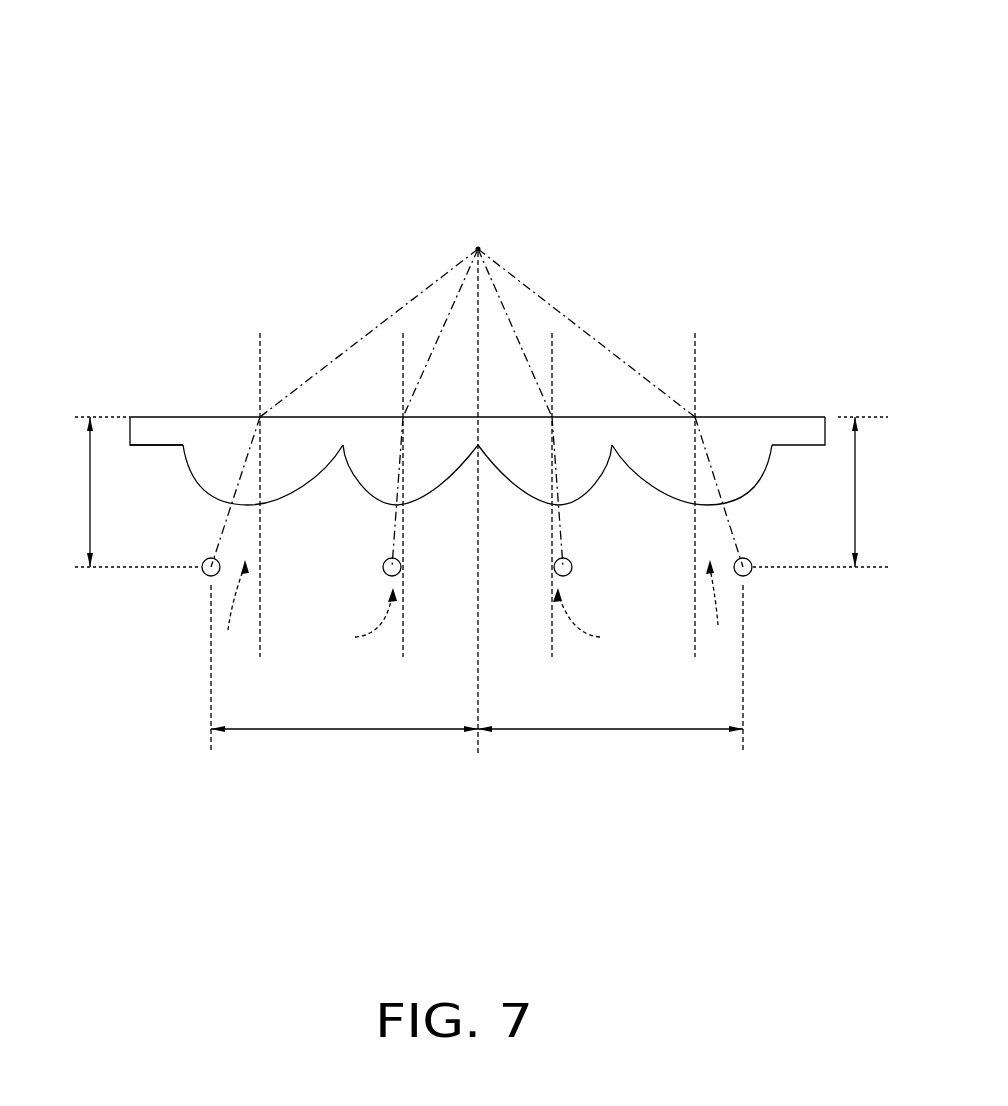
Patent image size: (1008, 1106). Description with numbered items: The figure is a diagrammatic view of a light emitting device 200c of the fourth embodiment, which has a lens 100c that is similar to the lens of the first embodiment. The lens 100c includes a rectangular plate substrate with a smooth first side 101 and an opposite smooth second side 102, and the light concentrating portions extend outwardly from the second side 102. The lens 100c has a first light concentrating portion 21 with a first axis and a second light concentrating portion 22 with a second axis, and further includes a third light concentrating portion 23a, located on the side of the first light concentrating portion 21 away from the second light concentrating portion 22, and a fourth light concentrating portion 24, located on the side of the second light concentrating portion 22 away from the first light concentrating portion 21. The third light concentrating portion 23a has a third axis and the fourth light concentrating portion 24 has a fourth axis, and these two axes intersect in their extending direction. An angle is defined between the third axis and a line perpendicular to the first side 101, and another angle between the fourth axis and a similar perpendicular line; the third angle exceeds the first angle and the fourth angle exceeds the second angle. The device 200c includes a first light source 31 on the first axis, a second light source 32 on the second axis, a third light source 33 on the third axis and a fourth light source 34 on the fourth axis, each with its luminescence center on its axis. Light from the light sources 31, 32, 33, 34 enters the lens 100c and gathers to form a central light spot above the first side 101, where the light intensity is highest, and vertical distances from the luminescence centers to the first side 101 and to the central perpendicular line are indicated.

The light emitting device 200c is at (375, 60).
The lens 100c is at (740, 410).
The first side 101 is at (165, 417).
The second side 102 is at (158, 445).
The first light concentrating portion 21 is at (425, 503).
The second light concentrating portion 22 is at (542, 503).
The third light concentrating portion 23a is at (270, 505).
The fourth light concentrating portion 24 is at (683, 505).
The first light source 31 is at (383, 572).
The second light source 32 is at (572, 572).
The third light source 33 is at (203, 570).
The fourth light source 34 is at (752, 568).